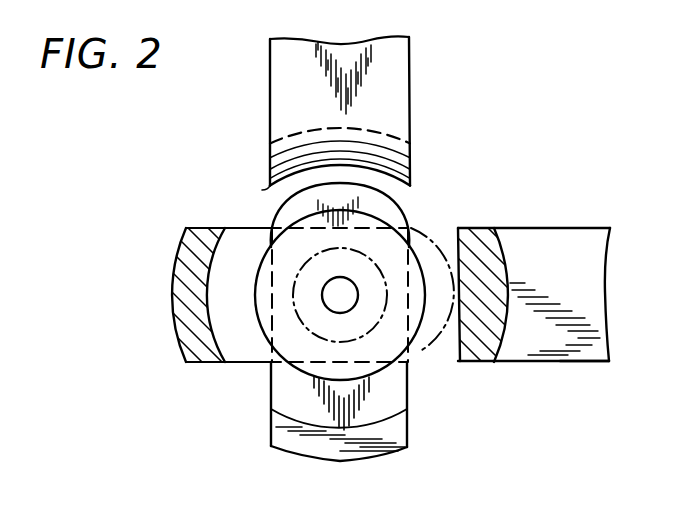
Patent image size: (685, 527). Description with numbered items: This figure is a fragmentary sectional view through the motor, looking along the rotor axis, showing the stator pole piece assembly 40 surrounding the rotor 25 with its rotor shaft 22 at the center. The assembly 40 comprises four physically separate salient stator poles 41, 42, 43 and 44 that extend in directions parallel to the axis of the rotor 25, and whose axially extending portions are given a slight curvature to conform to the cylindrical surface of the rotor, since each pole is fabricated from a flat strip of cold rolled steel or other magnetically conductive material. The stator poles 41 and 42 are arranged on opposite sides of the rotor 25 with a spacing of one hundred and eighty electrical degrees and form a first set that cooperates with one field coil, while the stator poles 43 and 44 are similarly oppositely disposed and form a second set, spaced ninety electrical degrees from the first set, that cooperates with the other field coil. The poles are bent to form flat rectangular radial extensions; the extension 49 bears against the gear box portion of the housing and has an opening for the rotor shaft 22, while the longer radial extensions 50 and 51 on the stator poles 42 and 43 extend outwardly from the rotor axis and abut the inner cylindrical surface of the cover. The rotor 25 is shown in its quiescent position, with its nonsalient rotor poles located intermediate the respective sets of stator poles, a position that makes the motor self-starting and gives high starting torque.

The rotor shaft 22 is at (327, 287).
The rotor 25 is at (298, 367).
The stator pole piece assembly 40 is at (608, 300).
The salient stator pole 41 is at (184, 342).
The salient stator pole 42 is at (477, 232).
The salient stator pole 43 is at (271, 183).
The salient stator pole 44 is at (407, 430).
The radial extension 49 is at (400, 194).
The radial extension 50 is at (574, 362).
The radial extension 51 is at (403, 73).